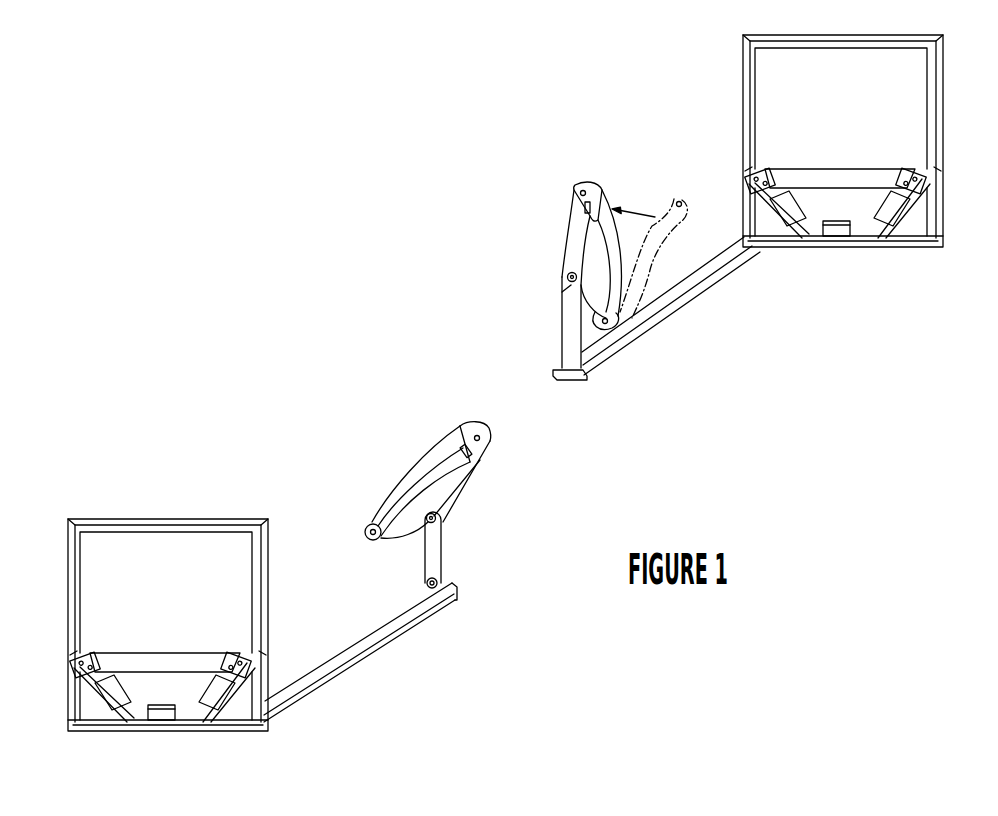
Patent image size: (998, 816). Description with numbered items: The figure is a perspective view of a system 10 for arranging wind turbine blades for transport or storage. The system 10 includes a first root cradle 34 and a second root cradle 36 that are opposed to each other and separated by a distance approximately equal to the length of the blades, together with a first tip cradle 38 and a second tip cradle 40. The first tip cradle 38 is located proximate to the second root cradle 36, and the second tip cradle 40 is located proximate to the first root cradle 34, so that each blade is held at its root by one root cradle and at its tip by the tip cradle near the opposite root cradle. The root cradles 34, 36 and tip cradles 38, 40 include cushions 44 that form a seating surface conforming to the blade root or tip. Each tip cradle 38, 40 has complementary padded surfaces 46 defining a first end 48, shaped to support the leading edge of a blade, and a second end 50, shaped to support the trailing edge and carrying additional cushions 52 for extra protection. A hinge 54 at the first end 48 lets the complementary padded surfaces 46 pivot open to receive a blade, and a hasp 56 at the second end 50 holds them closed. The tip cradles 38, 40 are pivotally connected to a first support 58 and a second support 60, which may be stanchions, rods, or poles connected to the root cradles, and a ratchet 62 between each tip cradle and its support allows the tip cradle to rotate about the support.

The system 10 is at (273, 258).
The first root cradle 34 is at (123, 730).
The second root cradle 36 is at (863, 248).
The first tip cradle 38 is at (580, 329).
The second tip cradle 40 is at (422, 527).
The cushions 44 is at (180, 712).
The complementary padded surfaces 46 is at (503, 323).
The first end 48 is at (398, 545).
The second end 50 is at (490, 442).
The additional cushions 52 is at (460, 426).
The hinge 54 is at (366, 528).
The hasp 56 is at (488, 427).
The first support 58 is at (554, 370).
The second support 60 is at (443, 565).
The ratchet 62 is at (400, 605).